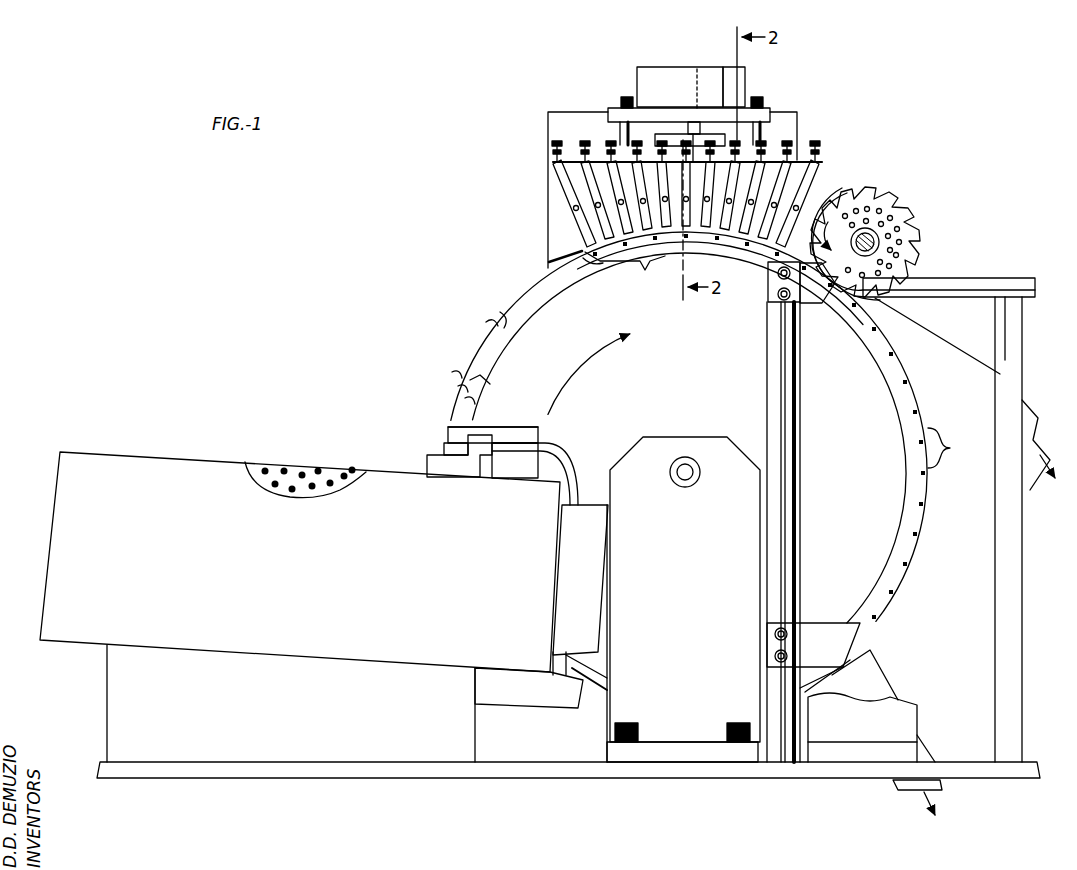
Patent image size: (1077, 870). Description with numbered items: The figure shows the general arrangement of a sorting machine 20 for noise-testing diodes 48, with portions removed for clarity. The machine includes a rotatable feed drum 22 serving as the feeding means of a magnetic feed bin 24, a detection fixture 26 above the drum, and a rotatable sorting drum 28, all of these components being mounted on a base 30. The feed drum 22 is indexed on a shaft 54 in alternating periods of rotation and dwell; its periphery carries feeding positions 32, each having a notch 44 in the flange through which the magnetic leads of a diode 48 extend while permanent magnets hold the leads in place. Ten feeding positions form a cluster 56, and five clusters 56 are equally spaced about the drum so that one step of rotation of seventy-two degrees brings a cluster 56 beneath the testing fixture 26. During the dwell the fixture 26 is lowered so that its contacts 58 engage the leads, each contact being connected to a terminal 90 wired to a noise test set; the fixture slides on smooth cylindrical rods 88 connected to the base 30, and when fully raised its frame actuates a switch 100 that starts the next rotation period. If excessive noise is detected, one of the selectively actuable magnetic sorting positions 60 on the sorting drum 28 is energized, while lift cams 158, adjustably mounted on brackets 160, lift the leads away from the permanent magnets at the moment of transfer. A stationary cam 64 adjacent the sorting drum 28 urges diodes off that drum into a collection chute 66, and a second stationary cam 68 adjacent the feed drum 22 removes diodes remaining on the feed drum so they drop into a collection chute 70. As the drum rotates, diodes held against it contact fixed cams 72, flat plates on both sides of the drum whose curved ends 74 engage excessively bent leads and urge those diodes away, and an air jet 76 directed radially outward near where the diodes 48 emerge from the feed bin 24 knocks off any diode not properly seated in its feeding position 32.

The sorting machine 20 is at (472, 310).
The rotatable feed drum 22 is at (522, 292).
The magnetic feed bin 24 is at (366, 462).
The detection fixture 26 is at (815, 192).
The rotatable sorting drum 28 is at (918, 208).
The base 30 is at (1025, 762).
The feeding position 32 is at (466, 402).
The notch 44 is at (487, 336).
The diode 48 is at (316, 466).
The shaft 54 is at (670, 473).
The cluster 56 is at (480, 380).
The contacts 58 is at (549, 265).
The magnetic sorting positions 60 is at (910, 196).
The stationary cam 64 is at (846, 244).
The collection chute 66 is at (948, 338).
The second stationary cam 68 is at (814, 625).
The collection chute 70 is at (880, 679).
The fixed cams 72 is at (518, 428).
The curved end 74 is at (448, 430).
The air jet 76 is at (428, 450).
The cylindrical rods 88 is at (620, 100).
The terminal 90 is at (820, 150).
The switch 100 is at (703, 67).
The lift cams 158 is at (805, 300).
The brackets 160 is at (780, 338).